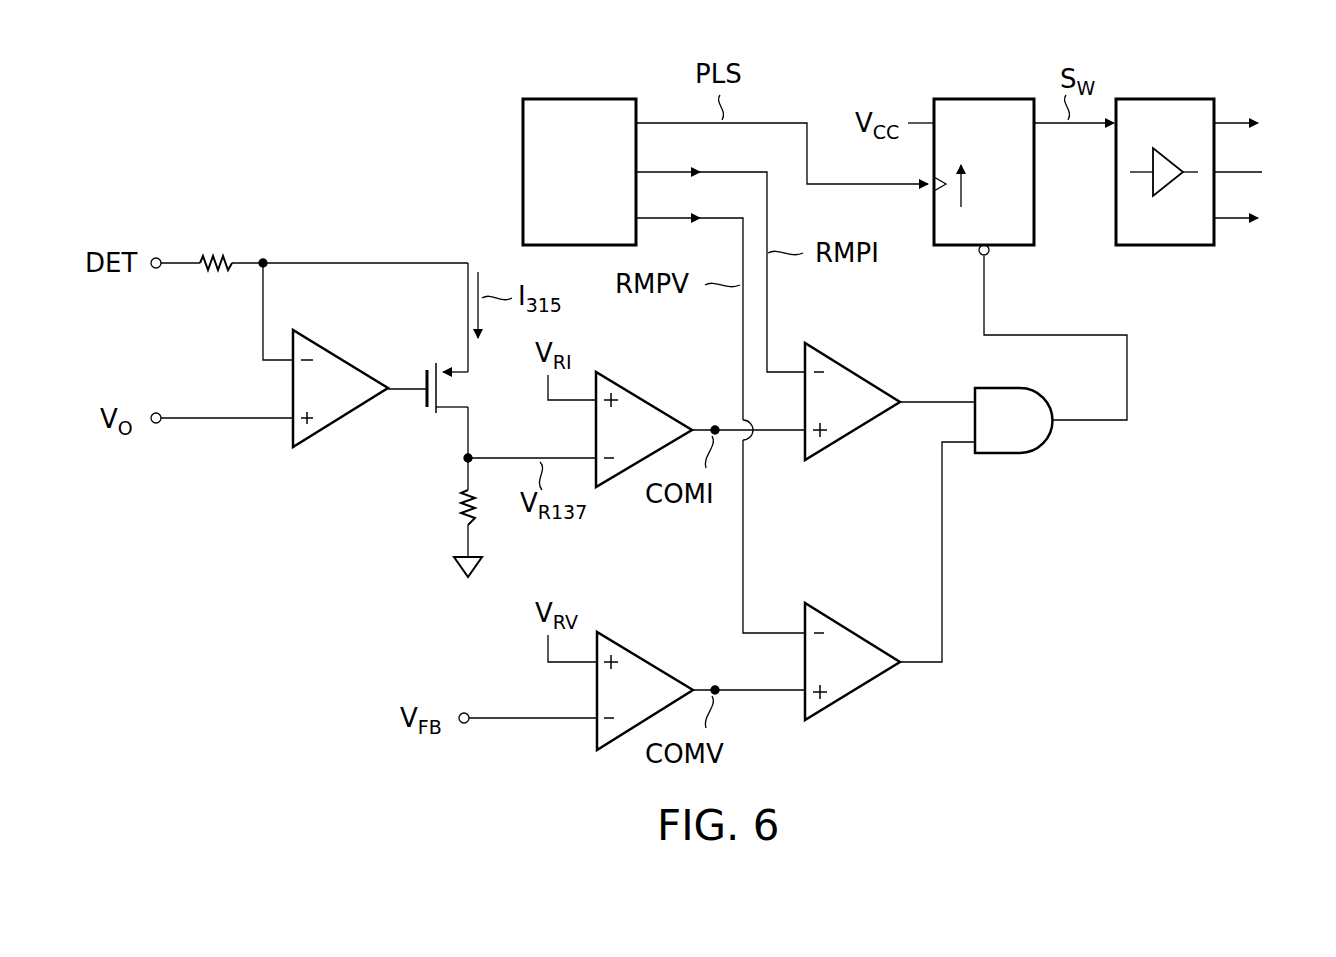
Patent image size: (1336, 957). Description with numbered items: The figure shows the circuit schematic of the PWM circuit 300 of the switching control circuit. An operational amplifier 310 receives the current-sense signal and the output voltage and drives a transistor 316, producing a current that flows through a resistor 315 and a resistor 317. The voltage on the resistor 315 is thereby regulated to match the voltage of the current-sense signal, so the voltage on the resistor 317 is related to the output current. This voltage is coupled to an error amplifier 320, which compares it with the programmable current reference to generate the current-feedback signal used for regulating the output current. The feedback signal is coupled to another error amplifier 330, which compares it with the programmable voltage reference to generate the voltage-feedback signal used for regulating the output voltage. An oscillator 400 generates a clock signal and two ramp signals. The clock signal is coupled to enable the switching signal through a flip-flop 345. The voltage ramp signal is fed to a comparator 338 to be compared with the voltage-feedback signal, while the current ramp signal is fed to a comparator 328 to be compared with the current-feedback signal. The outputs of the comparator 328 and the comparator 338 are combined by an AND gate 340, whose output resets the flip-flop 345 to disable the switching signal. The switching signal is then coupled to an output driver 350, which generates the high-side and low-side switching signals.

The PWM circuit 300 is at (1312, 75).
The operational amplifier 310 is at (315, 345).
The resistor 315 is at (217, 247).
The transistor 316 is at (458, 358).
The resistor 317 is at (452, 512).
The error amplifier 320 is at (620, 385).
The comparator 328 is at (830, 355).
The error amplifier 330 is at (620, 645).
The comparator 338 is at (830, 615).
The AND gate 340 is at (1015, 388).
The flip-flop 345 is at (975, 98).
The output driver 350 is at (1157, 98).
The oscillator 400 is at (563, 98).